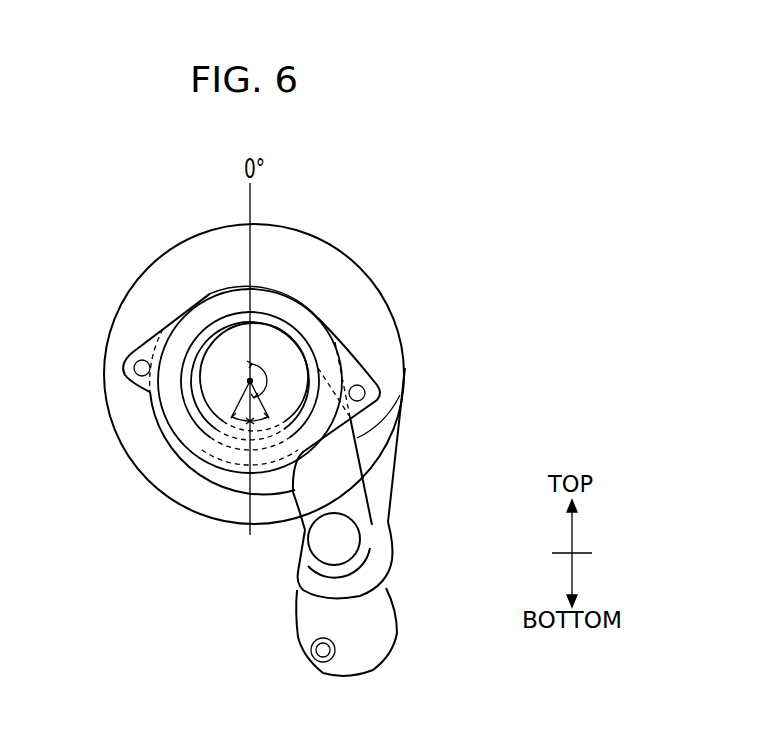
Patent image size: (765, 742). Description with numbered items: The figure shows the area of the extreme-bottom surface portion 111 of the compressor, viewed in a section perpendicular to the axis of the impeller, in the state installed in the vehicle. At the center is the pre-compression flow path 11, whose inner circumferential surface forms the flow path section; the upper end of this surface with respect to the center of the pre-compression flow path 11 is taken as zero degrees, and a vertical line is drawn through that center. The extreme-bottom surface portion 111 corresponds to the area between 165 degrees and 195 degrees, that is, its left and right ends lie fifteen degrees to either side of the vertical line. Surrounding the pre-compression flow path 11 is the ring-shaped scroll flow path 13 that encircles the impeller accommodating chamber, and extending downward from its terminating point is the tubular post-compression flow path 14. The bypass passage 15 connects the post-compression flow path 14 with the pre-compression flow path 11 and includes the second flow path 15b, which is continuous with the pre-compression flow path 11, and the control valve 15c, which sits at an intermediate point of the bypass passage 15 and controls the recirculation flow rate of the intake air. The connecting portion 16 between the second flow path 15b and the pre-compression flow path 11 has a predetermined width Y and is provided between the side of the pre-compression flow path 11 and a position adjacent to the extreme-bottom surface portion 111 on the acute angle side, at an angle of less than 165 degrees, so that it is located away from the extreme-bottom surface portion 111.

The pre-compression flow path 11 is at (204, 357).
The extreme-bottom surface portion 111 is at (215, 470).
The scroll flow path 13 is at (338, 270).
The post-compression flow path 14 is at (387, 597).
The bypass passage 15 is at (357, 480).
The second flow path 15b is at (400, 394).
The control valve 15c is at (380, 525).
The connecting portion 16 is at (290, 432).
The 165 degrees 165 is at (262, 365).
The 195 degrees 195 is at (245, 414).
The predetermined width Y is at (222, 458).